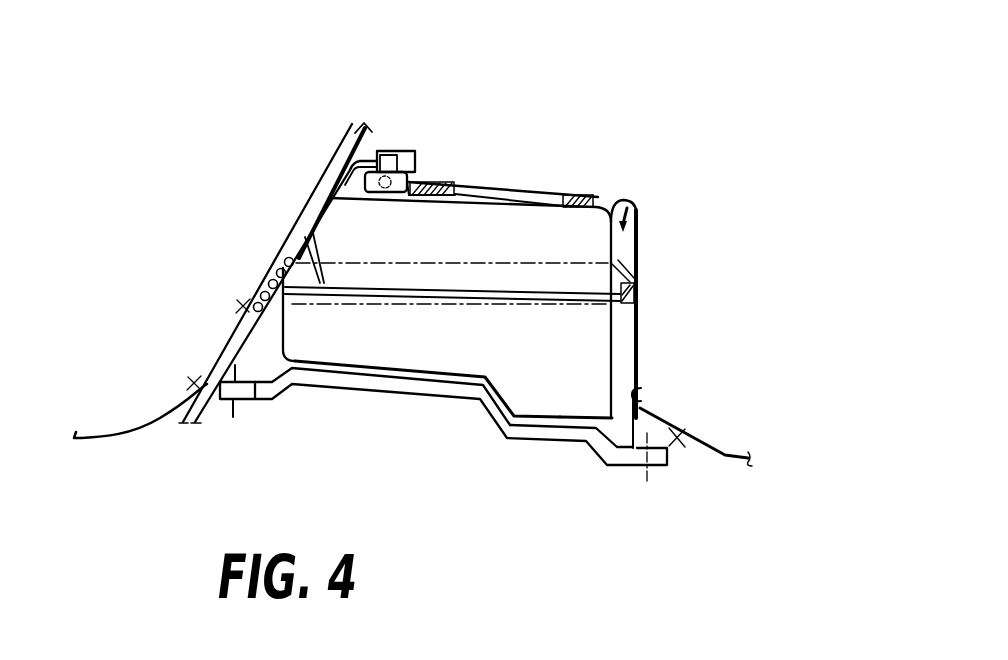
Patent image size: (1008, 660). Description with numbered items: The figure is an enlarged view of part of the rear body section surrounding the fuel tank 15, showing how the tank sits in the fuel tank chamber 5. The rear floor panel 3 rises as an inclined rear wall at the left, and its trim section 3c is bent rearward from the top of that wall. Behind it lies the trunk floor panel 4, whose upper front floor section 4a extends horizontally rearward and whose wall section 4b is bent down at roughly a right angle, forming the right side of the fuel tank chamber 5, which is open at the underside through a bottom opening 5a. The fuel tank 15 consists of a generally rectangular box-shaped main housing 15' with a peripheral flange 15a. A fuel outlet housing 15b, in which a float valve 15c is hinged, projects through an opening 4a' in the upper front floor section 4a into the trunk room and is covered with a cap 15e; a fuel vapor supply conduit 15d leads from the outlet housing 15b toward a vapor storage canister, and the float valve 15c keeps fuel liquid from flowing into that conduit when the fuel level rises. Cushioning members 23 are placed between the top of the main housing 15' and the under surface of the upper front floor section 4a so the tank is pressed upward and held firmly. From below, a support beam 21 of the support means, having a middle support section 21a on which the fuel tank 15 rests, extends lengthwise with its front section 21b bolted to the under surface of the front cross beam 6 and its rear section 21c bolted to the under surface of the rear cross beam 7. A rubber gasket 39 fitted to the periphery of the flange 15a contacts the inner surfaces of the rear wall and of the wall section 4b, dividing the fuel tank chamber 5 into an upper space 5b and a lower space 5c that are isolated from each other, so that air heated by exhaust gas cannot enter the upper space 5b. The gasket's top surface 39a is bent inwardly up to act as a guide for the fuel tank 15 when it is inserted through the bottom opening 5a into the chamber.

The rear floor panel 3 is at (116, 425).
The trim section 3c is at (230, 340).
The trunk floor panel 4 is at (728, 432).
The upper front floor section 4a is at (504, 140).
The opening 4a' is at (467, 158).
The wall section 4b is at (640, 371).
The fuel tank chamber 5 is at (634, 200).
The bottom opening 5a is at (641, 389).
The upper space 5b is at (618, 197).
The lower space 5c is at (634, 334).
The front cross beam 6 is at (240, 362).
The rear cross beam 7 is at (612, 417).
The fuel tank 15 is at (447, 307).
The main housing 15' is at (427, 412).
The peripheral flange 15a is at (292, 236).
The fuel outlet housing 15b is at (411, 176).
The float valve 15c is at (399, 150).
The fuel vapor supply conduit 15d is at (320, 202).
The cap 15e is at (396, 155).
The support beam 21 is at (382, 404).
The middle support section 21a is at (318, 382).
The front section 21b is at (240, 401).
The rear section 21c is at (560, 436).
The cushioning member 23 is at (582, 194).
The rubber gasket 39 is at (637, 293).
The top surface 39a is at (640, 220).